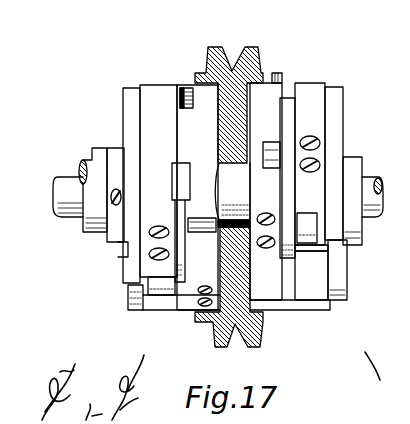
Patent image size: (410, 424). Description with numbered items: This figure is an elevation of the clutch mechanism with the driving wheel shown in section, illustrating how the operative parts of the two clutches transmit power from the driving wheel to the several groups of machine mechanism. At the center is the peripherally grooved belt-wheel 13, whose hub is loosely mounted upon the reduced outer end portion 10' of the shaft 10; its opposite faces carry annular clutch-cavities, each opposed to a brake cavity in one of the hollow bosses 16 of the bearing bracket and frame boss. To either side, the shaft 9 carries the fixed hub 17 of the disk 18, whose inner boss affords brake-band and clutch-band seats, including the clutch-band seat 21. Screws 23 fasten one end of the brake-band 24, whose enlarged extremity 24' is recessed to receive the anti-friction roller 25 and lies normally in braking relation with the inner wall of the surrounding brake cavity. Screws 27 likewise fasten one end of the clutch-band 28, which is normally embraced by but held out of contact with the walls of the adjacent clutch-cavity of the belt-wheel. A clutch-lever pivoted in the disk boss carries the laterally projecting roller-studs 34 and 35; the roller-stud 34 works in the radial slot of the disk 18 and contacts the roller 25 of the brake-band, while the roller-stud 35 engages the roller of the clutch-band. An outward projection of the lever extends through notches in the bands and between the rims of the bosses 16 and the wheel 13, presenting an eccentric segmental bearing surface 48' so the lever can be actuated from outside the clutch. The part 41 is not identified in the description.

The shaft 9 is at (378, 176).
The shaft 10 is at (80, 189).
The reduced outer end portion 10' is at (232, 195).
The belt-wheel 13 is at (250, 51).
The hollow boss 16 is at (128, 297).
The hub 17 is at (352, 162).
The disk 18 is at (335, 103).
The clutch-band seat 21 is at (272, 222).
The screws 23 is at (163, 248).
The brake-band 24 is at (247, 181).
The enlarged extremity 24' is at (350, 270).
The anti-friction roller 25 is at (308, 251).
The screws 27 is at (205, 285).
The clutch-band 28 is at (236, 196).
The roller-stud 34 is at (198, 232).
The roller-stud 35 is at (165, 296).
The bearing 41 is at (193, 99).
The segmental bearing surface 48' is at (245, 173).